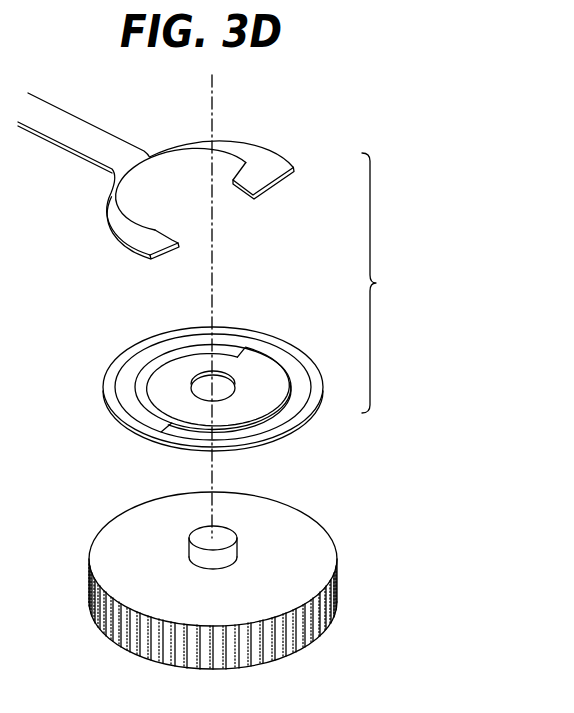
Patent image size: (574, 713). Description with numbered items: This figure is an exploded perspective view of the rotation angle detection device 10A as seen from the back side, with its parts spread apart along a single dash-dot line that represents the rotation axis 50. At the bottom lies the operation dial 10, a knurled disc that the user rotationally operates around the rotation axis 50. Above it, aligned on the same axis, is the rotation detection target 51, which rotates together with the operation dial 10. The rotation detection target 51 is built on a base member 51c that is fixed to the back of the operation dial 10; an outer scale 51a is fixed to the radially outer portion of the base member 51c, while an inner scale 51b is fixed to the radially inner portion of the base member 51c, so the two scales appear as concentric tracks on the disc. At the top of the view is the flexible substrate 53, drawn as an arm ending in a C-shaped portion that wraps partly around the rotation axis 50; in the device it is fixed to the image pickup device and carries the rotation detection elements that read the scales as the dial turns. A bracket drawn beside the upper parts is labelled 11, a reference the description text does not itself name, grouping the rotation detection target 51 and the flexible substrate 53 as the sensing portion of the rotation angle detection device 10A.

The rotation angle detection device 10A is at (390, 142).
The operation dial 10 is at (303, 523).
The cam plate assembly 11 is at (388, 283).
The rotation axis 50 is at (210, 107).
The rotation detection target 51 is at (220, 350).
The outer scale 51a is at (155, 352).
The inner scale 51b is at (228, 352).
The base member 51c is at (290, 352).
The flexible substrate 53 is at (118, 202).